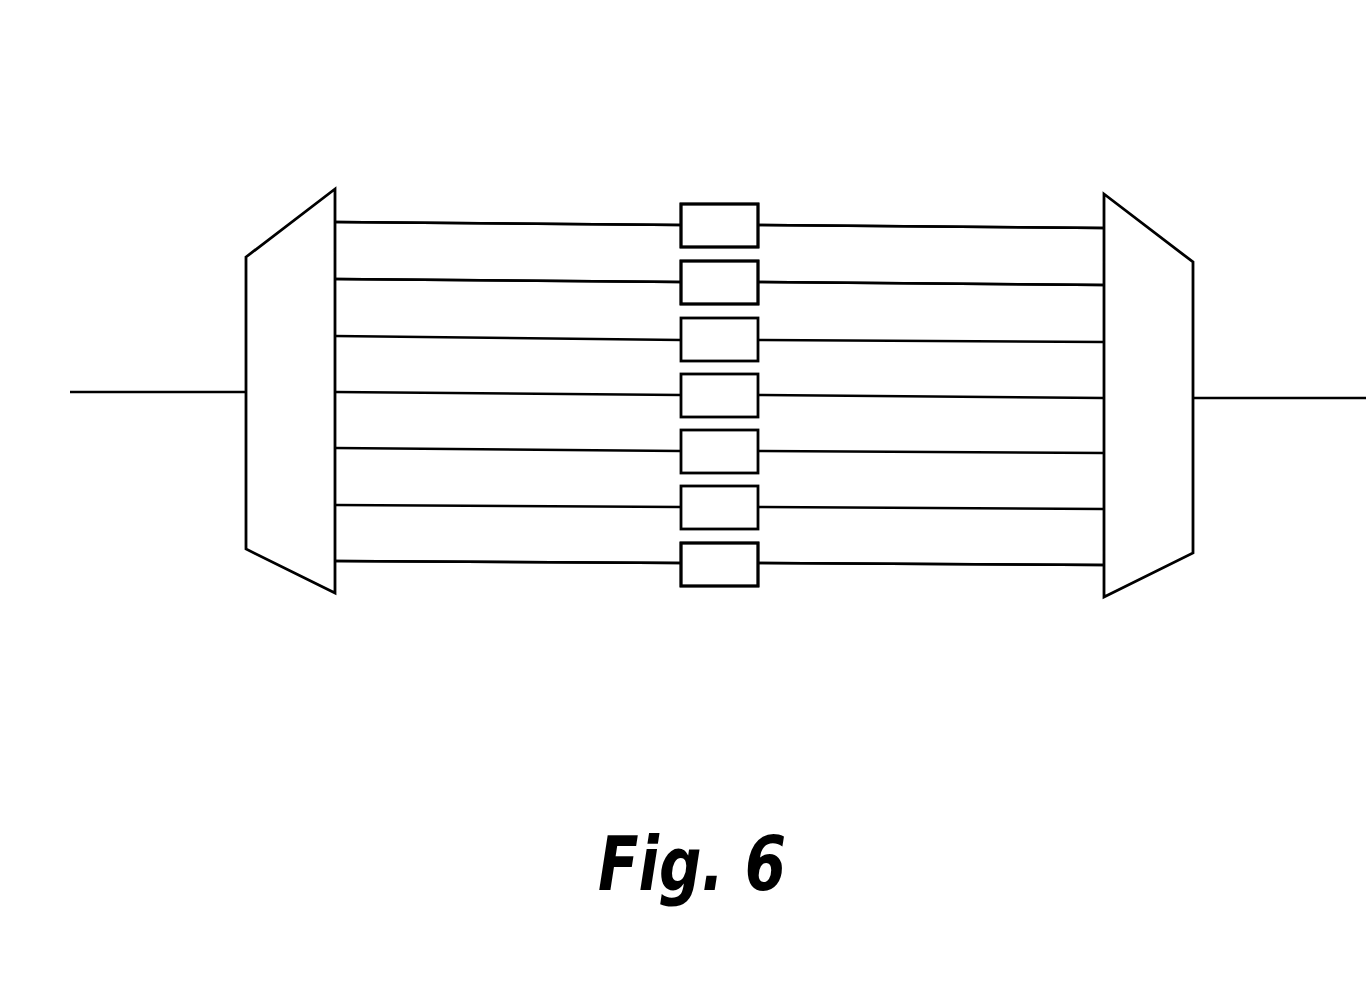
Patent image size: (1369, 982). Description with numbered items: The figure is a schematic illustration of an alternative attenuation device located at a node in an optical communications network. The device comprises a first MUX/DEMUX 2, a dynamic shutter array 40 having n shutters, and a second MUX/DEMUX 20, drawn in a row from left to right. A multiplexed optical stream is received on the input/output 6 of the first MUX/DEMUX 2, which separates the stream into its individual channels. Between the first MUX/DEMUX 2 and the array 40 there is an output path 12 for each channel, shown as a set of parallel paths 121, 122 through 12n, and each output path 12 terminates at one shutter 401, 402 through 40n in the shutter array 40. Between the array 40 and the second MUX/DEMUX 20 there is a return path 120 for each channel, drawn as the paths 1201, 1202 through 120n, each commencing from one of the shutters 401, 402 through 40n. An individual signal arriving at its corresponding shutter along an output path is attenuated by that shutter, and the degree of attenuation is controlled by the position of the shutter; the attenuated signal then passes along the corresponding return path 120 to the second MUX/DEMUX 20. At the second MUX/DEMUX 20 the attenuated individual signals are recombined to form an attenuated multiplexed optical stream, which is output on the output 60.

The first MUX/DEMUX 2 is at (297, 578).
The input/output 6 is at (118, 394).
The output path 12 is at (455, 191).
The output path 121 is at (377, 222).
The output path 122 is at (552, 280).
The output path 12n is at (524, 565).
The second MUX/DEMUX 20 is at (1138, 582).
The dynamic shutter array 40 is at (693, 156).
The shutter 401 is at (712, 203).
The shutter 402 is at (680, 263).
The shutter 40n is at (692, 586).
The output 60 is at (1313, 400).
The return path 120 is at (915, 197).
The return path 1201 is at (808, 225).
The return path 1202 is at (1018, 284).
The return path 120n is at (904, 567).